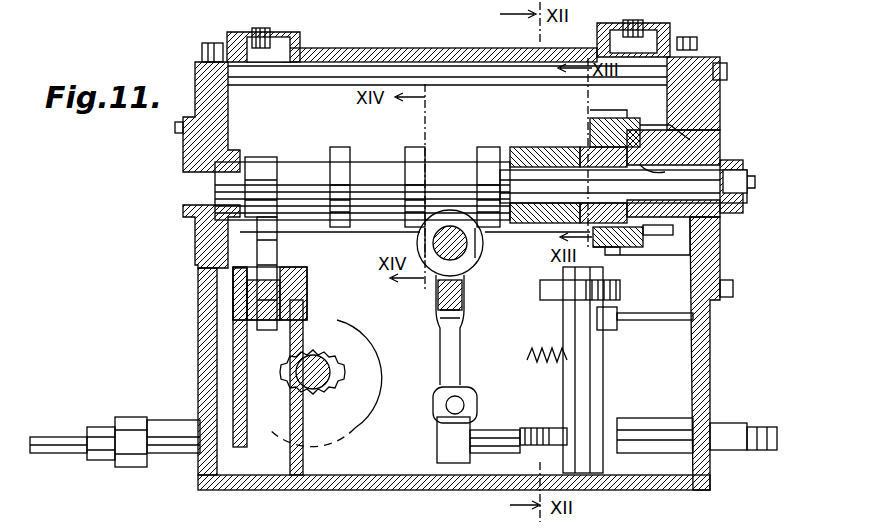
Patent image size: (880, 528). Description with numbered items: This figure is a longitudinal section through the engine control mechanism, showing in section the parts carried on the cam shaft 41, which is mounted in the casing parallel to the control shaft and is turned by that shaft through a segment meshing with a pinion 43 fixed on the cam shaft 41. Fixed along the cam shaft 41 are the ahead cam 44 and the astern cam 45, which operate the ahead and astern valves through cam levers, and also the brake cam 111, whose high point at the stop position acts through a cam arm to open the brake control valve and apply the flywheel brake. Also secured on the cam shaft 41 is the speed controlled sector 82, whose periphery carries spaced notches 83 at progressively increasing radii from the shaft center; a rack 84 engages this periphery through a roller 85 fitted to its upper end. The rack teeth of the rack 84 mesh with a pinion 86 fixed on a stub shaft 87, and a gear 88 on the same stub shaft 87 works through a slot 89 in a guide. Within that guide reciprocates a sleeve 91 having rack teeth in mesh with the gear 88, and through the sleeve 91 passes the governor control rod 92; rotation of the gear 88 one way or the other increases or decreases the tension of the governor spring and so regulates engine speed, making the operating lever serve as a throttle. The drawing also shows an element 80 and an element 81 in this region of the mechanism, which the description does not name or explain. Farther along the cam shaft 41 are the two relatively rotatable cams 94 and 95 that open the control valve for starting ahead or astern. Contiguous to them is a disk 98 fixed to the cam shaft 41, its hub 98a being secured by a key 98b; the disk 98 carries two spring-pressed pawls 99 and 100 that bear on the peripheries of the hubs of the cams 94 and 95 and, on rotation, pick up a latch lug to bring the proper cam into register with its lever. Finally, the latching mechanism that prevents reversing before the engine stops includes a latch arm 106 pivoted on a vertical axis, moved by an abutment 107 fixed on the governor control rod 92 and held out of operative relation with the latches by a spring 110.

The cam shaft 41 is at (222, 190).
The pinion 43 is at (670, 136).
The ahead cam 44 is at (347, 150).
The astern cam 45 is at (420, 150).
The connecting rod 80 is at (457, 353).
The crank pin 81 is at (462, 289).
The speed controlled sector 82 is at (270, 242).
The notches 83 is at (272, 237).
The rack 84 is at (255, 353).
The roller 85 is at (300, 296).
The pinion 86 is at (332, 358).
The stub shaft 87 is at (335, 380).
The gear 88 is at (337, 333).
The slot 89 is at (360, 405).
The sleeve 91 is at (178, 428).
The governor control rod 92 is at (50, 455).
The cam 94 is at (553, 150).
The cam 95 is at (575, 147).
The disk 98 is at (642, 125).
The hub 98a is at (650, 228).
The key 98b is at (666, 166).
The spring-pressed pawl 99 is at (608, 124).
The spring-pressed pawl 100 is at (620, 252).
The latch arm 106 is at (612, 332).
The abutment 107 is at (697, 415).
The spring 110 is at (537, 366).
The brake cam 111 is at (477, 168).